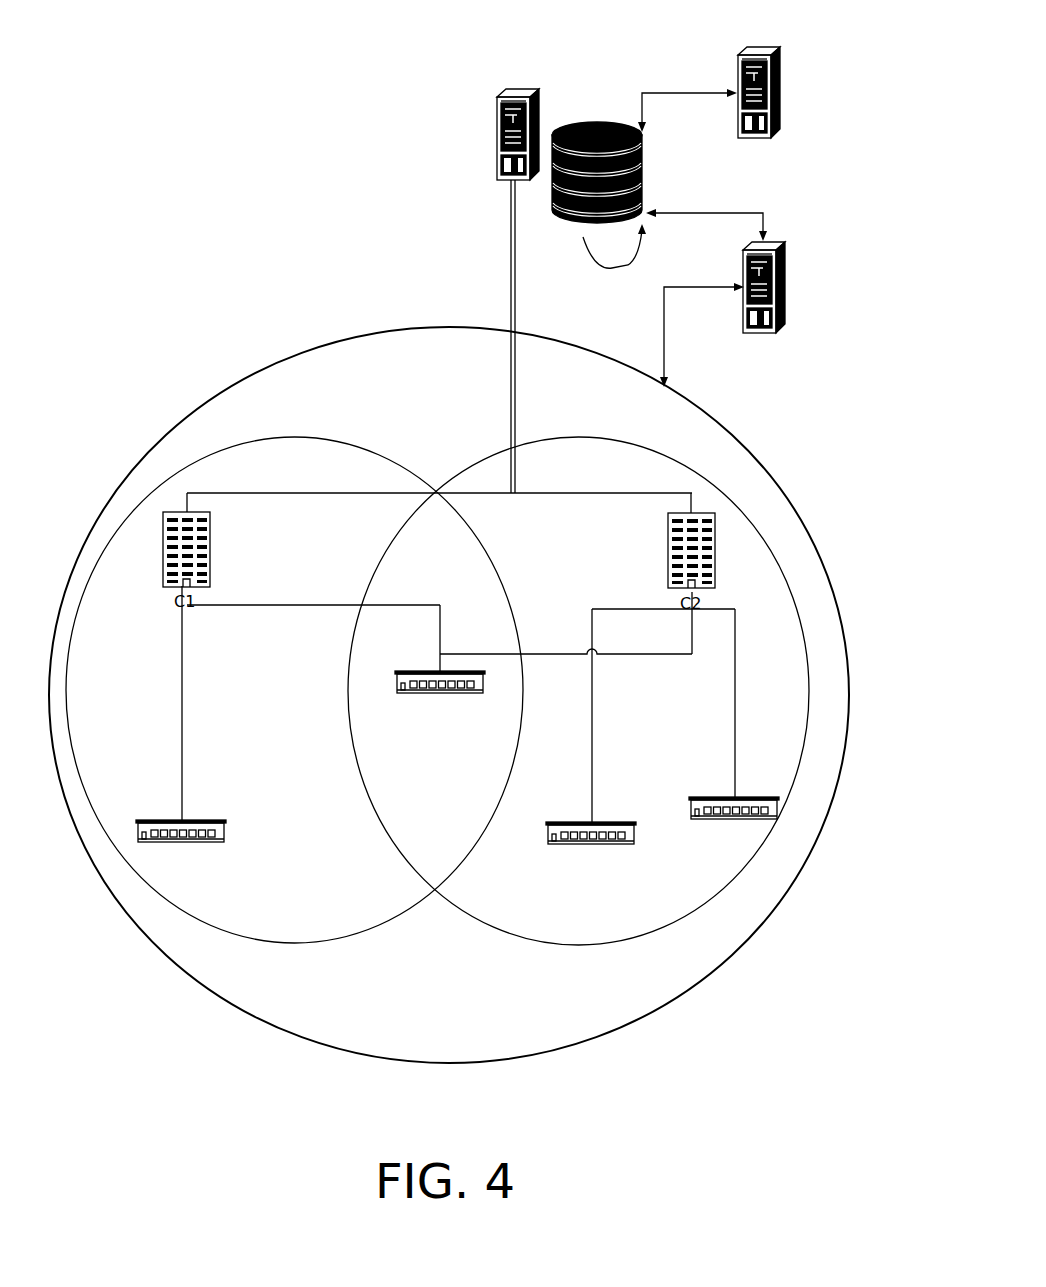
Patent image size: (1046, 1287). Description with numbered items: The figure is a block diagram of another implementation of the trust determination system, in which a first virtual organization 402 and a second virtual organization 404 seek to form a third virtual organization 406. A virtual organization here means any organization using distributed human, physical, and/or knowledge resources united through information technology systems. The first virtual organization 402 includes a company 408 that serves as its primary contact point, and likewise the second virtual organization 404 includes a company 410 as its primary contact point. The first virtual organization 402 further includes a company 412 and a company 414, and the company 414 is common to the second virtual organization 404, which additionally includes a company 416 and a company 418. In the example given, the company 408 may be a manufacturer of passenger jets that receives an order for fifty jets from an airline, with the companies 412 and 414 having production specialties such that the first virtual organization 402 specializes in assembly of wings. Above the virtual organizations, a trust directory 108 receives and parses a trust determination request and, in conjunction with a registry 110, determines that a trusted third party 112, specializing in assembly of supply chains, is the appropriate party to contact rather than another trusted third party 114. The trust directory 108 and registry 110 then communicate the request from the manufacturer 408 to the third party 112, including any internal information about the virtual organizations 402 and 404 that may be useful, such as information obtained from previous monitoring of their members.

The trust directory 108 is at (497, 100).
The registry 110 is at (606, 66).
The trusted third party 112 is at (787, 257).
The trusted third party 114 is at (765, 47).
The first virtual organization 402 is at (350, 441).
The second virtual organization 404 is at (550, 441).
The third virtual organization 406 is at (766, 461).
The company 408 is at (213, 552).
The company 410 is at (667, 527).
The company 412 is at (205, 820).
The company 414 is at (400, 688).
The company 416 is at (547, 832).
The company 418 is at (712, 797).